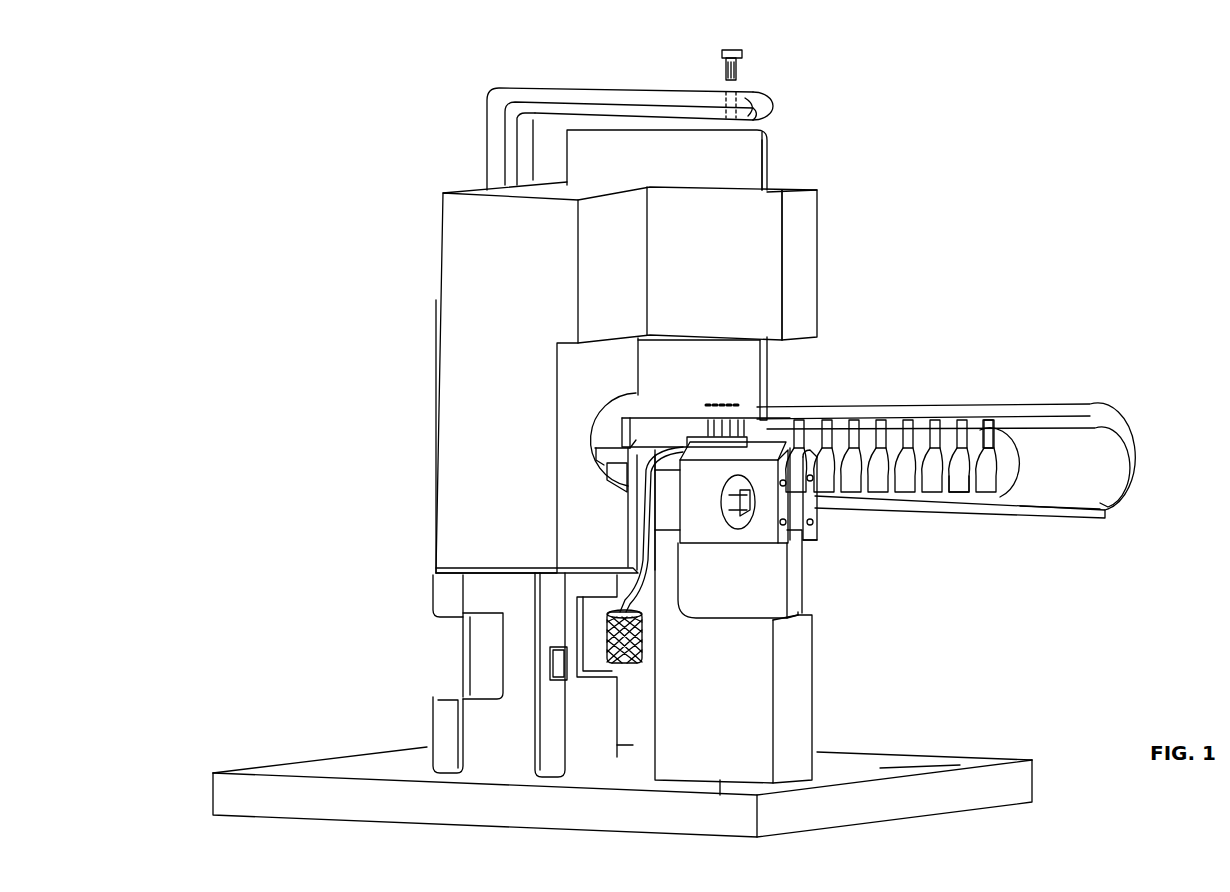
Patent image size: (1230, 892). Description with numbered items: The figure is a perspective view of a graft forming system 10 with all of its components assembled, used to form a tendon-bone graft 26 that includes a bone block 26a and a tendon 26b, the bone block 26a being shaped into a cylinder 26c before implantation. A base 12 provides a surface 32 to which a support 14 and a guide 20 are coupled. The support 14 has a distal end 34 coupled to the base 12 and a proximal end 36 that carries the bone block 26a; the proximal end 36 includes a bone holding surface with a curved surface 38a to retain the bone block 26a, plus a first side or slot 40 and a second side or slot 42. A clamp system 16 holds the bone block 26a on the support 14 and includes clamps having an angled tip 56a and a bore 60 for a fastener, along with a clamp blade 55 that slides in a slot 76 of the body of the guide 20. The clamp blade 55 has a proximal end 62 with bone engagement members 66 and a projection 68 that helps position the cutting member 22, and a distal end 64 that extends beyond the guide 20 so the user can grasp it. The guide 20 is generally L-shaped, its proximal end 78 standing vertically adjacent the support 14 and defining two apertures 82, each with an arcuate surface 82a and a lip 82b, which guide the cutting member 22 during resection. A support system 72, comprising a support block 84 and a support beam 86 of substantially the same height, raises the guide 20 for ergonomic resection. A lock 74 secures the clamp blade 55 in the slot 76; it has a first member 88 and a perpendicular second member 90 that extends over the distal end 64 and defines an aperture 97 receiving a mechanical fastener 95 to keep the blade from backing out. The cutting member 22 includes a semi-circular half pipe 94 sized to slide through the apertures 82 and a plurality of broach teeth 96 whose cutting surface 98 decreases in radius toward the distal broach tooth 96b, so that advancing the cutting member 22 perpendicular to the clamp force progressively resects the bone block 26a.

The graft forming system 10 is at (368, 70).
The base 12 is at (975, 728).
The support 14 is at (818, 652).
The clamp system 16 is at (783, 470).
The guide 20 is at (432, 240).
The cutting member 22 is at (947, 458).
The tendon-bone graft 26 is at (606, 576).
The bone block 26a is at (722, 437).
The tendon 26b is at (610, 595).
The cylinder 26c is at (632, 665).
The surface 32 is at (860, 768).
The distal end 34 is at (720, 795).
The proximal end 36 is at (814, 542).
The curved surface 38a is at (808, 470).
The first side or slot 40 is at (782, 590).
The second side or slot 42 is at (800, 568).
The clamp blade 55 is at (776, 144).
The angled tip 56a is at (770, 445).
The bore 60 is at (738, 512).
The proximal end 62 is at (772, 356).
The distal end 64 is at (770, 172).
The bone engagement member 66 is at (720, 492).
The projection 68 is at (608, 428).
The support system 72 is at (434, 674).
The lock 74 is at (596, 117).
The slot 76 is at (808, 236).
The proximal end 78 is at (432, 455).
The apertures 82 is at (600, 485).
The arcuate surface 82a is at (597, 458).
The lip 82b is at (612, 476).
The support block 84 is at (437, 725).
The support beam 86 is at (553, 725).
The first member 88 is at (495, 122).
The second member 90 is at (637, 82).
The half pipe 94 is at (1052, 515).
The mechanical fastener 95 is at (745, 60).
The broach tooth 96 is at (915, 430).
The distal broach tooth 96b is at (975, 432).
The aperture 97 is at (775, 102).
The cutting surface 98 is at (948, 490).